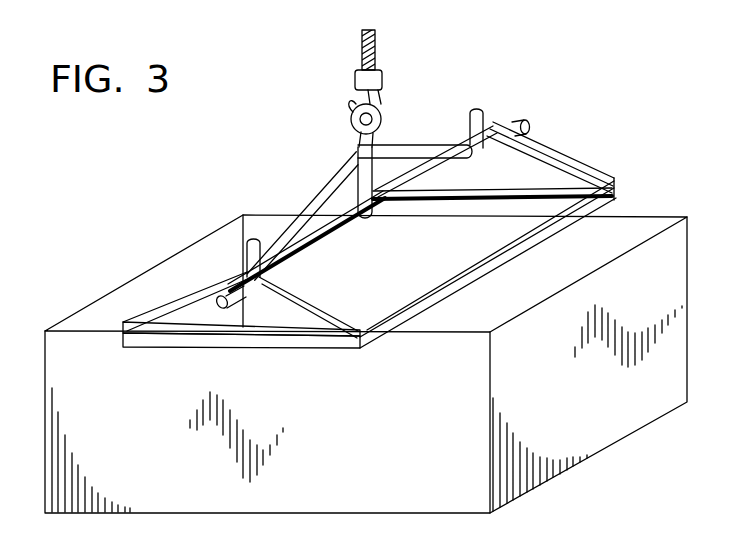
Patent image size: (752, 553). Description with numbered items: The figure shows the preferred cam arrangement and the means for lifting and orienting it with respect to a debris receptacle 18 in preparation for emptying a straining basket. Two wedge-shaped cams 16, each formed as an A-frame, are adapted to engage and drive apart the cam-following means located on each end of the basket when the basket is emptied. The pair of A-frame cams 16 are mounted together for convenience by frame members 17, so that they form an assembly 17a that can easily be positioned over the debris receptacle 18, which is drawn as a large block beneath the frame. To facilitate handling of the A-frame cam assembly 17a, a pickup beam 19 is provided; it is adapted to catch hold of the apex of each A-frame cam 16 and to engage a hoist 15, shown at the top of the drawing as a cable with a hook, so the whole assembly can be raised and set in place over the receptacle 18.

The hoist 15 is at (378, 54).
The wedge-shaped cam 16 is at (560, 150).
The frame member 17 is at (475, 281).
The assembly 17a is at (338, 356).
The debris receptacle 18 is at (158, 262).
The pickup beam 19 is at (345, 238).